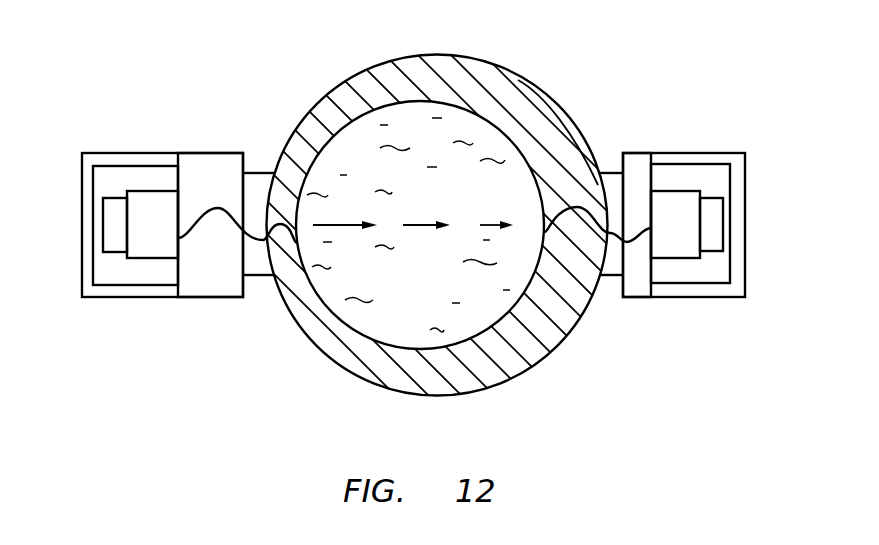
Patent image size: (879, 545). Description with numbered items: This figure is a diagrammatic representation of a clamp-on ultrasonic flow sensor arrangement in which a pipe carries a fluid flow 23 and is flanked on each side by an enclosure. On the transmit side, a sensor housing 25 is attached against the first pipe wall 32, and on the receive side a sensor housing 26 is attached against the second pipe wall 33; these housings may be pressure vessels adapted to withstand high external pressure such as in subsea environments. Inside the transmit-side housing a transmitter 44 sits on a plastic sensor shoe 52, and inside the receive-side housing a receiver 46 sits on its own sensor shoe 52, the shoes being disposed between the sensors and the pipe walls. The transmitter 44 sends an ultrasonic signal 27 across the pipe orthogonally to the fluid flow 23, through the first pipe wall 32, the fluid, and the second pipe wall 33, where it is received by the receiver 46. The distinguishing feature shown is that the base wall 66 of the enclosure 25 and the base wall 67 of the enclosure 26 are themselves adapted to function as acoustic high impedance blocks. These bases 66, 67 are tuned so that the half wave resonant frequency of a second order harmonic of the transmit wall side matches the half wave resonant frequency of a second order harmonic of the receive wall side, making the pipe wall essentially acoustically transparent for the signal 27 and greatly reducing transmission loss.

The fluid flow 23 is at (407, 301).
The sensor housing 25 is at (104, 314).
The sensor housing 26 is at (700, 316).
The signal 27 is at (220, 207).
The first pipe wall 32 is at (285, 247).
The second pipe wall 33 is at (583, 195).
The transmitter 44 is at (118, 223).
The receiver 46 is at (715, 228).
The sensor shoe 52 is at (149, 248).
The base wall 66 is at (208, 280).
The base wall 67 is at (633, 287).